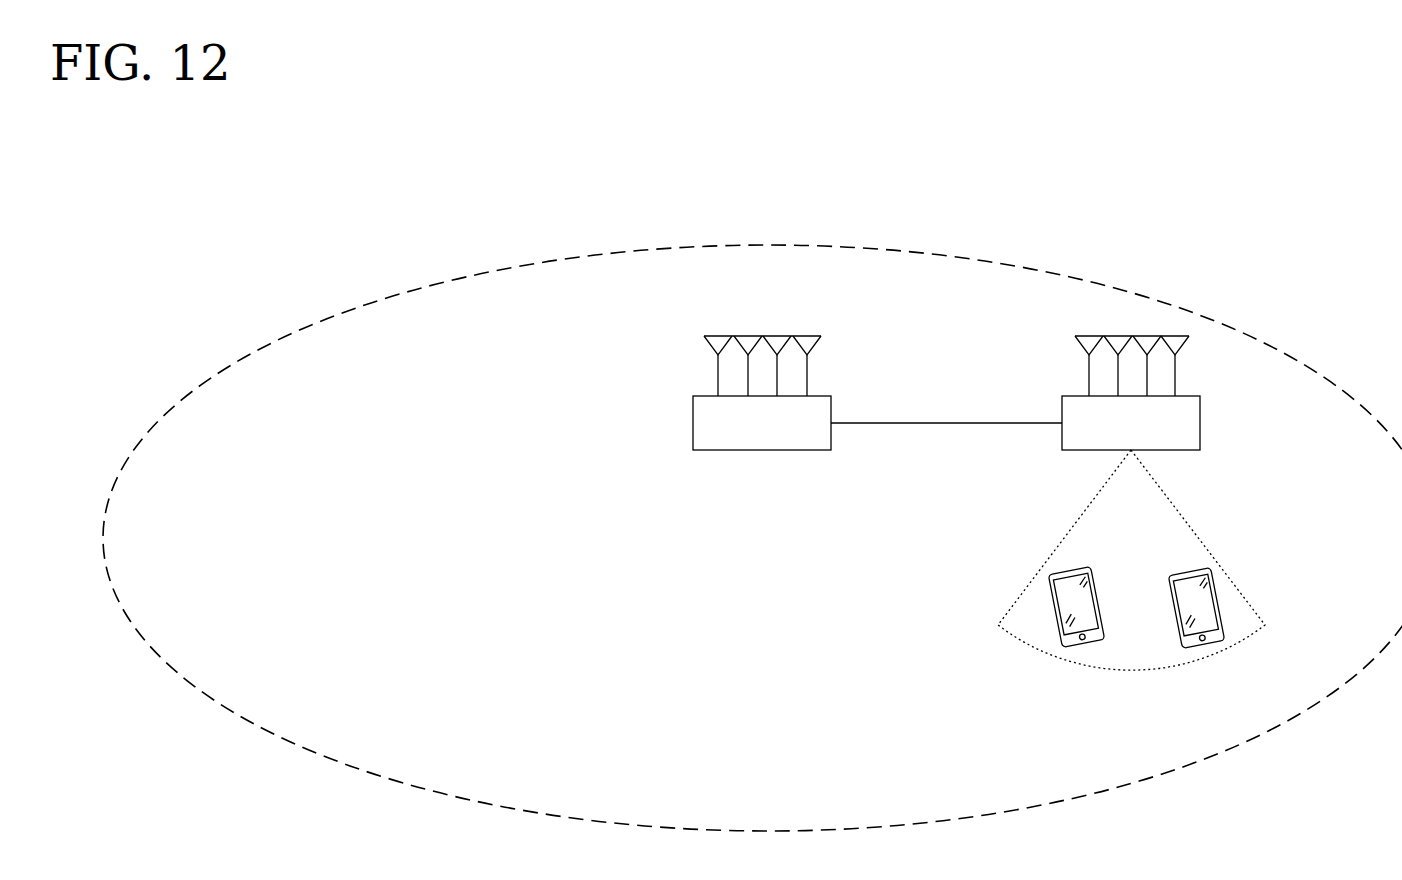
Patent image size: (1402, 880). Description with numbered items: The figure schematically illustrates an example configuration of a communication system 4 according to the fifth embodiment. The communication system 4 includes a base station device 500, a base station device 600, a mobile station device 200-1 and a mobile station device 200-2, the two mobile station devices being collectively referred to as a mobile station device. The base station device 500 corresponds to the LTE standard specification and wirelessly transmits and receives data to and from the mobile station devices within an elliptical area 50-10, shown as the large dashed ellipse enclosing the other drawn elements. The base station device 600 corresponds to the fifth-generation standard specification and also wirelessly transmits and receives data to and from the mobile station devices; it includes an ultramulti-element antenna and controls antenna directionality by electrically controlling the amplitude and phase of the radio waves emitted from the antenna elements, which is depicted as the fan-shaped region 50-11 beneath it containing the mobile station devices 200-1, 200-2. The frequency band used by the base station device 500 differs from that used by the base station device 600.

The communication system 4 is at (1267, 175).
The elliptical area 50-10 is at (1113, 287).
The beam / sector coverage area 50-11 is at (1192, 528).
The base station device 500 is at (817, 393).
The base station device 600 is at (1187, 393).
The mobile station device 200-1 is at (1085, 650).
The mobile station device 200-2 is at (1205, 650).